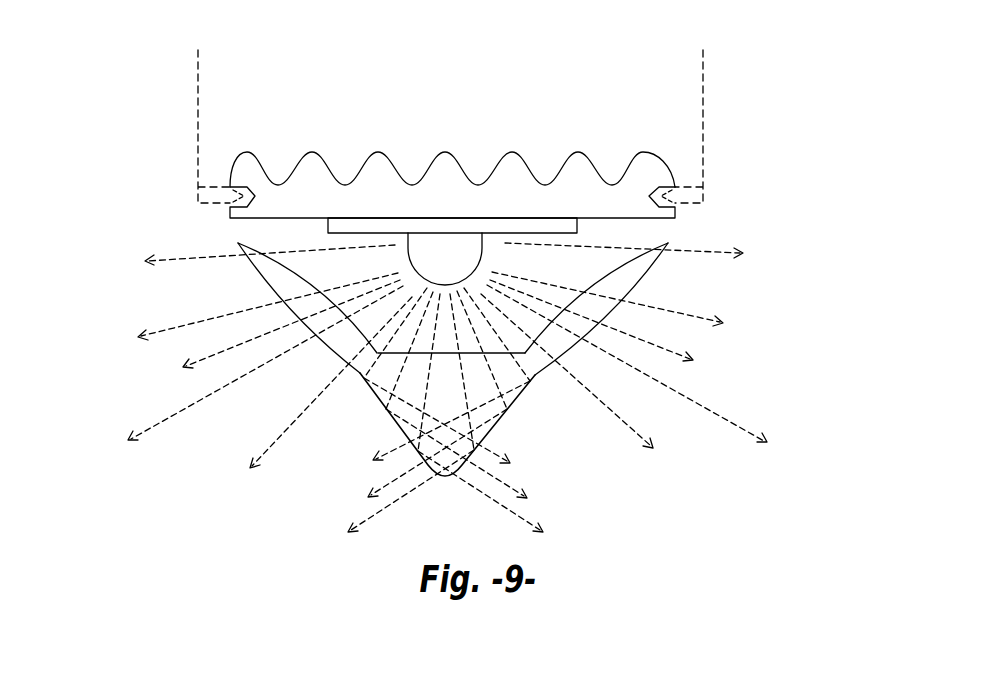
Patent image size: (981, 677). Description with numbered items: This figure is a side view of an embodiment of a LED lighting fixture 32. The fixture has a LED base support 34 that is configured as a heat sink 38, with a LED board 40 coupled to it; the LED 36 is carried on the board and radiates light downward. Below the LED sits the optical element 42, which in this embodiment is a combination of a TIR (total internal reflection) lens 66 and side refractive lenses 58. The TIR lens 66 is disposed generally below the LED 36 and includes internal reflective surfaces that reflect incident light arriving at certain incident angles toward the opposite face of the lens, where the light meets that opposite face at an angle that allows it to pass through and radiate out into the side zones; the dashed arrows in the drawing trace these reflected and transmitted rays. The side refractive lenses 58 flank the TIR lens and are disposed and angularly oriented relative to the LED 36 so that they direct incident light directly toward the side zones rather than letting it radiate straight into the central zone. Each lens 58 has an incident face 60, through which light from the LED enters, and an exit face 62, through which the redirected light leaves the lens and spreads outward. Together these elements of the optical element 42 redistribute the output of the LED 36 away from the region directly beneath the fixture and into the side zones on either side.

The lighting fixture 32 is at (772, 122).
The LED base support 34 is at (558, 96).
The LED 36 is at (427, 248).
The heat sink 38 is at (382, 167).
The LED board 40 is at (558, 232).
The optical element 42 is at (448, 361).
The side refractive lens 58 is at (263, 268).
The incident face 60 is at (600, 283).
The exit face 62 is at (326, 347).
The TIR lens 66 is at (505, 428).